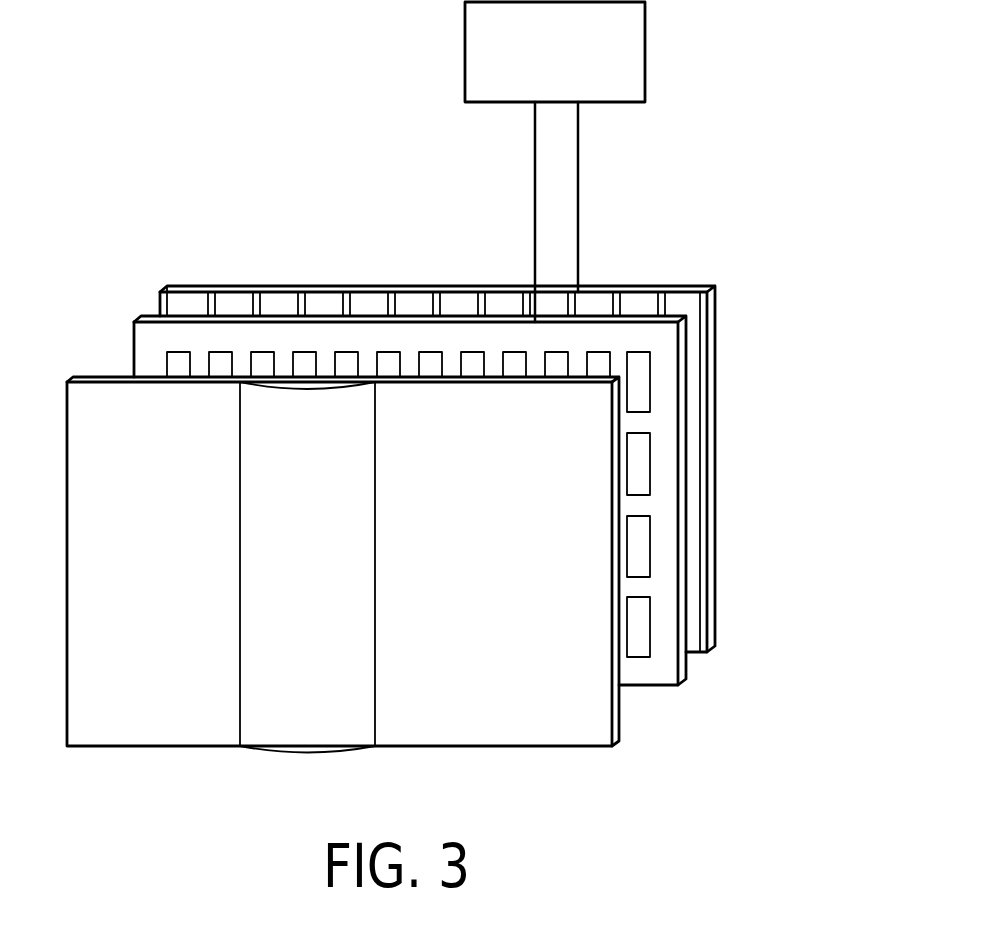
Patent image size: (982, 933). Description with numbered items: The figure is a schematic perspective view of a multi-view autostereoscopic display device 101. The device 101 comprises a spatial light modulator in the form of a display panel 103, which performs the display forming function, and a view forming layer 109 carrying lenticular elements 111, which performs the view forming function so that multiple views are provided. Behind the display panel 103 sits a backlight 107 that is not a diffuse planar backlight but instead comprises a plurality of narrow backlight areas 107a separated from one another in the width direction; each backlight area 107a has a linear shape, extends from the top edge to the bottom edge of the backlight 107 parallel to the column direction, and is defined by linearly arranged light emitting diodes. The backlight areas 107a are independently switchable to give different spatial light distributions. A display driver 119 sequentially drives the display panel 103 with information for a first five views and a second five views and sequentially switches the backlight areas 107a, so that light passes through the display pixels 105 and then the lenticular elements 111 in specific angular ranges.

The autostereoscopic display device 101 is at (98, 221).
The display panel 103 is at (465, 506).
The display pixels 105 is at (643, 397).
The backlight 107 is at (475, 437).
The backlight areas 107a is at (345, 300).
The view forming layer 109 is at (379, 589).
The lenticular elements 111 is at (347, 732).
The display driver 119 is at (645, 52).